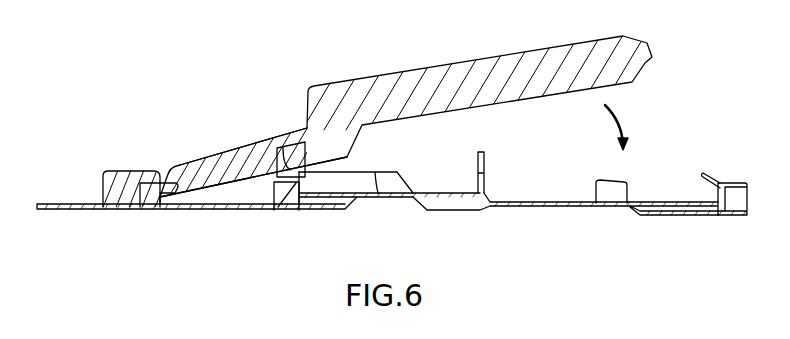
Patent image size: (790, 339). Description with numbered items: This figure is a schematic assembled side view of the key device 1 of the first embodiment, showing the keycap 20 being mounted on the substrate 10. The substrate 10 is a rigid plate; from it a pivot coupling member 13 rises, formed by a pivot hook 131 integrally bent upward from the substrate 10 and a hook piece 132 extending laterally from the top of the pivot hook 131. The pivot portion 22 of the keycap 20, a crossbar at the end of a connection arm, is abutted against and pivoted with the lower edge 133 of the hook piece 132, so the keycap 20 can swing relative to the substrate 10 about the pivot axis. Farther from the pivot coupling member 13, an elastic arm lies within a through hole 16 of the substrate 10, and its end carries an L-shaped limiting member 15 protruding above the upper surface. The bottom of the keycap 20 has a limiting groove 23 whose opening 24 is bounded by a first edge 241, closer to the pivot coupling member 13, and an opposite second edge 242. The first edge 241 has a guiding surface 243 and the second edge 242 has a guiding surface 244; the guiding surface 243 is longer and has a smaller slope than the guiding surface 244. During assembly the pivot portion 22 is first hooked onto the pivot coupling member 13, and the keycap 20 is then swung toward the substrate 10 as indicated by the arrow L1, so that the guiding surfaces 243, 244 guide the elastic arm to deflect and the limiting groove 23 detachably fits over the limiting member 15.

The key device 1 is at (165, 68).
The substrate 10 is at (52, 210).
The pivot coupling member 13 is at (121, 154).
The pivot hook 131 is at (110, 188).
The hook piece 132 is at (147, 170).
The lower edge 133 is at (177, 165).
The limiting member 15 is at (287, 207).
The through hole 16 is at (270, 210).
The keycap 20 is at (503, 63).
The pivot portion 22 is at (158, 205).
The limiting groove 23 is at (296, 207).
The opening 24 is at (259, 149).
The first edge 241 is at (243, 157).
The second edge 242 is at (288, 170).
The guiding surface 243 is at (237, 200).
The guiding surface 244 is at (322, 207).
The arrow L1 is at (623, 127).